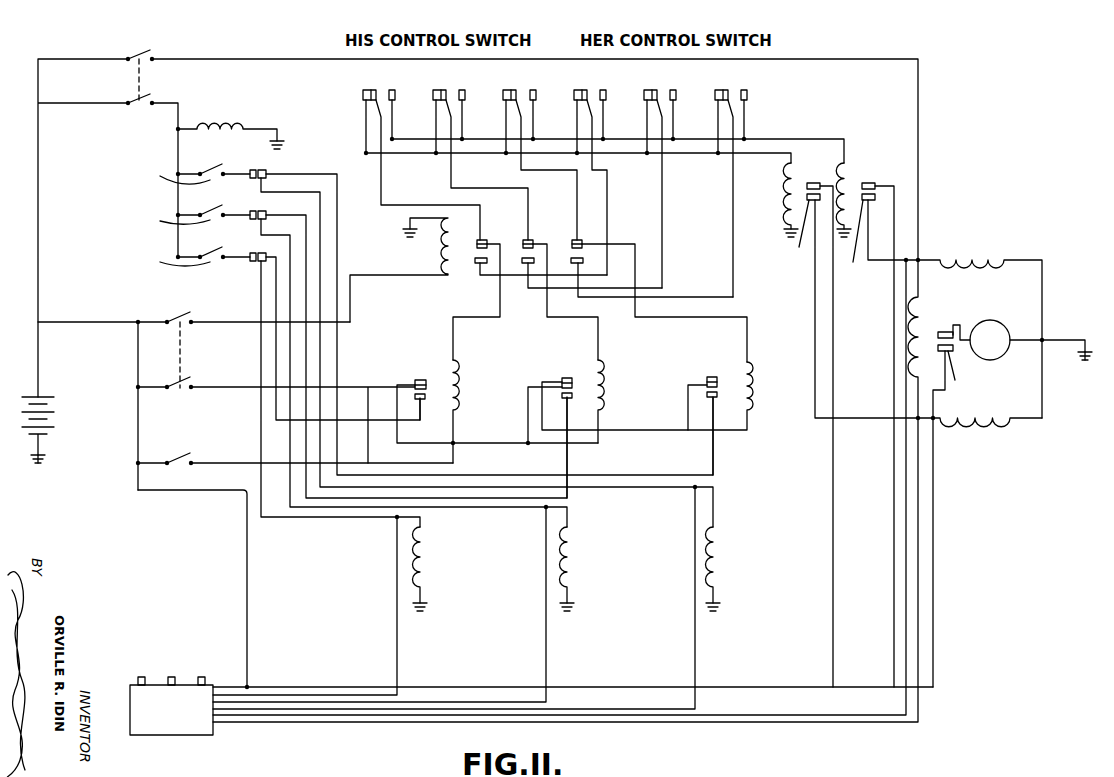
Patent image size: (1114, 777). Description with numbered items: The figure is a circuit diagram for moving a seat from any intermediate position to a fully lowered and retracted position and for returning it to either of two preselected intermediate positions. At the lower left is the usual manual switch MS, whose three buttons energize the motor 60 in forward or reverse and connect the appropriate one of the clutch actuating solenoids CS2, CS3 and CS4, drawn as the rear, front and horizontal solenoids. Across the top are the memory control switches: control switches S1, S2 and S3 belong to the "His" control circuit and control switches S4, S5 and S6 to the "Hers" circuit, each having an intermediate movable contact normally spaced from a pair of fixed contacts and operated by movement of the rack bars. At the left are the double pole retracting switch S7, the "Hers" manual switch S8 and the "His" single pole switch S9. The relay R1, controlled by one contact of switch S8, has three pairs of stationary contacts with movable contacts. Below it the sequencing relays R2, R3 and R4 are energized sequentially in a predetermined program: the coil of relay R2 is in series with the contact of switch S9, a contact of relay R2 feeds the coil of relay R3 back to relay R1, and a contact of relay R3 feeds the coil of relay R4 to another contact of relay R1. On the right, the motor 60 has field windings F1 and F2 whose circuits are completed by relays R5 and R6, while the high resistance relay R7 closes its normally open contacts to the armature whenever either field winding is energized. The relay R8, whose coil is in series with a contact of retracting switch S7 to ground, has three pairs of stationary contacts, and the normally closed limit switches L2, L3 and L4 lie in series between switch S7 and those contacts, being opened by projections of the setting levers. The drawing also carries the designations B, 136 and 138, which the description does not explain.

The control switch S1 is at (420, 150).
The control switch S2 is at (479, 150).
The control switch S3 is at (538, 150).
The control switch S4 is at (589, 167).
The control switch S5 is at (659, 174).
The control switch S6 is at (730, 178).
The retracting switch S7 is at (133, 85).
The "Hers" manual switch S8 is at (196, 361).
The "His" manual switch S9 is at (294, 563).
The relay R1 is at (548, 289).
The sequencing relay R2 is at (496, 408).
The sequencing relay R3 is at (616, 425).
The sequencing relay R4 is at (720, 413).
The relay R5 is at (850, 425).
The relay R6 is at (878, 425).
The relay R7 is at (958, 365).
The relay R8 is at (230, 127).
The limit switch L2 is at (170, 249).
The limit switch L3 is at (170, 208).
The limit switch L4 is at (170, 167).
The battery B is at (49, 430).
The ground connection 136 is at (38, 468).
The ground connection 138 is at (1074, 366).
The motor 60 is at (993, 327).
The field winding F1 is at (993, 432).
The field winding F2 is at (968, 258).
The clutch actuating solenoid CS2 is at (432, 592).
The clutch actuating solenoid CS3 is at (580, 587).
The clutch actuating solenoid CS4 is at (728, 577).
The manual switch MS is at (530, 611).